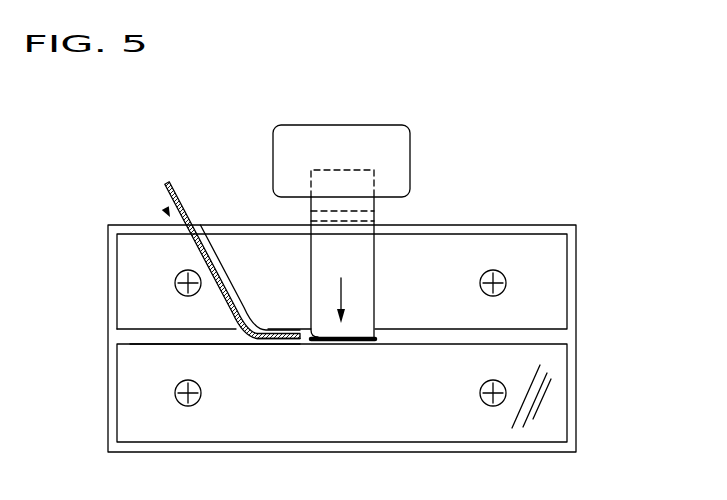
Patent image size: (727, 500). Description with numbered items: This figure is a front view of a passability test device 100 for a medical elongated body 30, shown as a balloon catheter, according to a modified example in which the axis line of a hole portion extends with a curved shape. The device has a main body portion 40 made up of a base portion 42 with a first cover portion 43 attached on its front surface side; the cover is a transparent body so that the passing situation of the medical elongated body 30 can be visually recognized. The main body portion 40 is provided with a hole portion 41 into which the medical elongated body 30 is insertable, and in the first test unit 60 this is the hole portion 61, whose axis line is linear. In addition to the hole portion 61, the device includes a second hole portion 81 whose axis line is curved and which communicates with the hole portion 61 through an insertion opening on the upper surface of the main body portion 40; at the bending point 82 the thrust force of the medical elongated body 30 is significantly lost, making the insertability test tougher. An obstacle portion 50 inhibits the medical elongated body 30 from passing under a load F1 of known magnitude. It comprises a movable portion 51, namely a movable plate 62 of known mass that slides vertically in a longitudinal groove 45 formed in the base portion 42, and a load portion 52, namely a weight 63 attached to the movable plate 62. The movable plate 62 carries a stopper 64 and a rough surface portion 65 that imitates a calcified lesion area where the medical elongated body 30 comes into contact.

The passability test device 100 is at (673, 121).
The first test unit 60 is at (98, 206).
The main body portion 40 is at (102, 271).
The base portion 42 is at (108, 388).
The first cover portion 43 is at (126, 433).
The hole portion 41 is at (227, 410).
The hole portion 61 is at (215, 339).
The medical elongated body 30 is at (186, 212).
The second hole portion 81 is at (230, 280).
The bending point 82 is at (257, 345).
The obstacle portion 50 is at (537, 153).
The movable portion 51 is at (481, 204).
The load portion 52 is at (481, 164).
The weight 63 is at (398, 166).
The movable plate 62 is at (353, 260).
The stopper 64 is at (375, 221).
The longitudinal groove 45 is at (320, 256).
The rough surface portion 65 is at (344, 343).
The load F1 is at (344, 292).